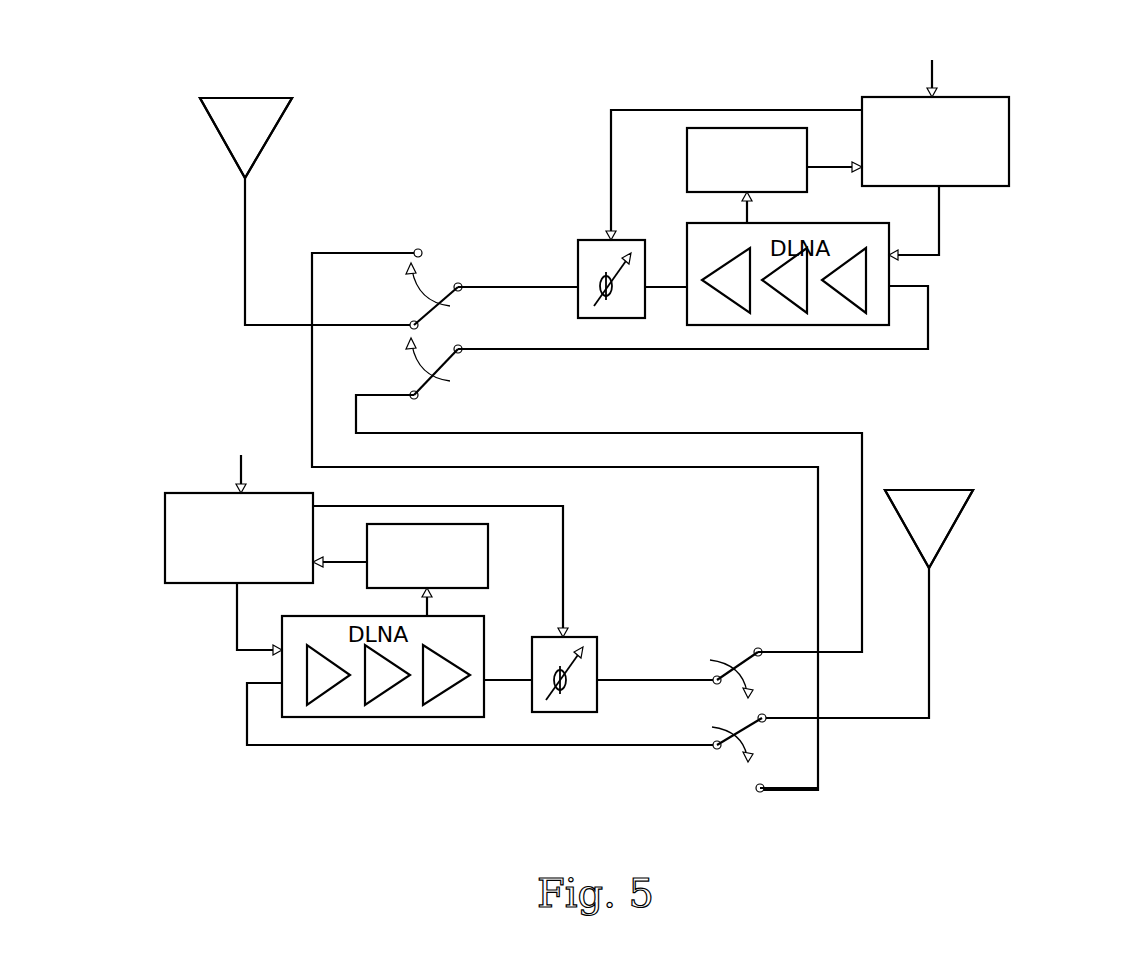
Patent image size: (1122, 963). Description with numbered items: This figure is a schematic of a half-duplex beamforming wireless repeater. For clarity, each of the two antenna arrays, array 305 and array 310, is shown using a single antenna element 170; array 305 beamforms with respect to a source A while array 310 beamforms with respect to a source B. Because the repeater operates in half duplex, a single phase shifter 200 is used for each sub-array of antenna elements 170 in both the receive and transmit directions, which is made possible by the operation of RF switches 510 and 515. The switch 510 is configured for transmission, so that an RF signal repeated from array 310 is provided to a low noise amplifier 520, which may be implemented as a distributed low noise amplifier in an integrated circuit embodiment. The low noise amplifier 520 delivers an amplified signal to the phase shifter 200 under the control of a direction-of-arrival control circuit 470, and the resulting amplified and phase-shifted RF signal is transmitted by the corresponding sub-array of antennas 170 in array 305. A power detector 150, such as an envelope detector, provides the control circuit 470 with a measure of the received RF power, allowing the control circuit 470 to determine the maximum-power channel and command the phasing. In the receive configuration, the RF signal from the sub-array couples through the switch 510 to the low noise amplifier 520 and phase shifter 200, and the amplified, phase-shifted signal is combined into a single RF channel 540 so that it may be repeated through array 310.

The power detector 150 is at (687, 138).
The antenna element 170 is at (245, 88).
The phase shifter 200 is at (577, 247).
The array 305 is at (196, 148).
The array 310 is at (998, 506).
The DOA control circuit 470 is at (1002, 128).
The RF switch 510 is at (420, 341).
The RF switch 515 is at (727, 720).
The low noise amplifier 520 is at (855, 321).
The RF channel 540 is at (555, 425).